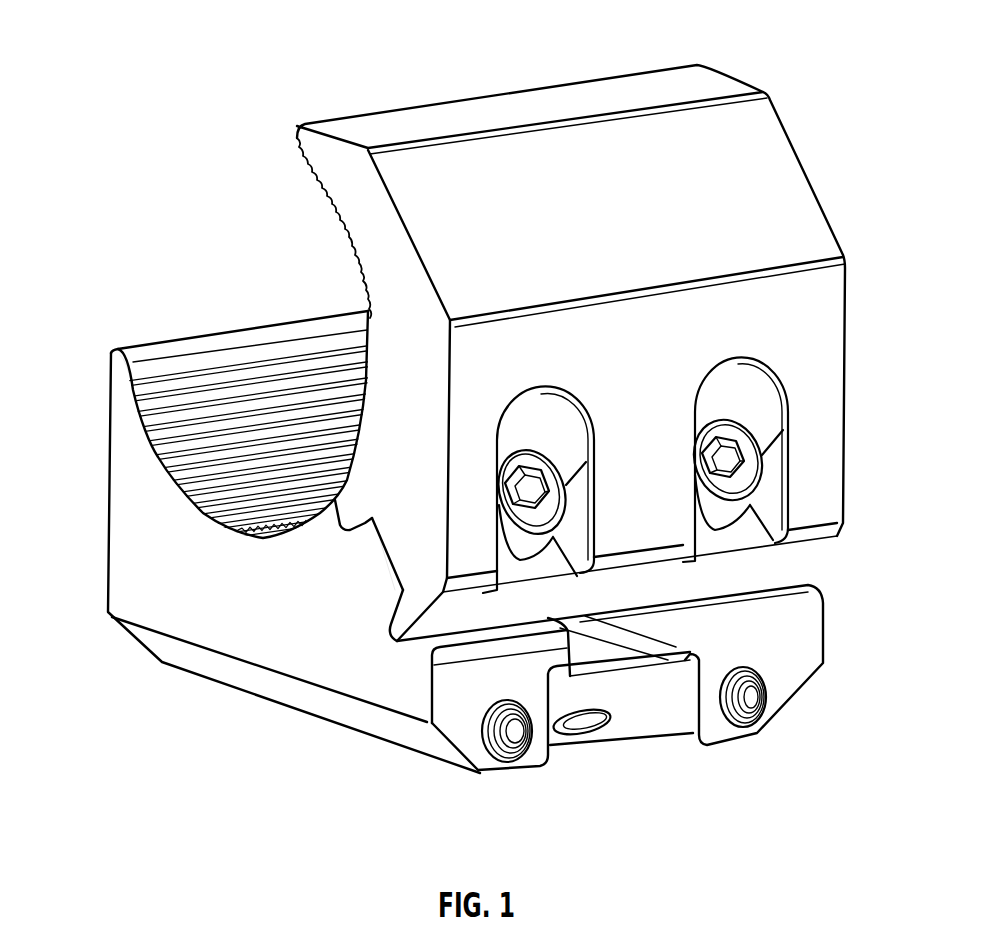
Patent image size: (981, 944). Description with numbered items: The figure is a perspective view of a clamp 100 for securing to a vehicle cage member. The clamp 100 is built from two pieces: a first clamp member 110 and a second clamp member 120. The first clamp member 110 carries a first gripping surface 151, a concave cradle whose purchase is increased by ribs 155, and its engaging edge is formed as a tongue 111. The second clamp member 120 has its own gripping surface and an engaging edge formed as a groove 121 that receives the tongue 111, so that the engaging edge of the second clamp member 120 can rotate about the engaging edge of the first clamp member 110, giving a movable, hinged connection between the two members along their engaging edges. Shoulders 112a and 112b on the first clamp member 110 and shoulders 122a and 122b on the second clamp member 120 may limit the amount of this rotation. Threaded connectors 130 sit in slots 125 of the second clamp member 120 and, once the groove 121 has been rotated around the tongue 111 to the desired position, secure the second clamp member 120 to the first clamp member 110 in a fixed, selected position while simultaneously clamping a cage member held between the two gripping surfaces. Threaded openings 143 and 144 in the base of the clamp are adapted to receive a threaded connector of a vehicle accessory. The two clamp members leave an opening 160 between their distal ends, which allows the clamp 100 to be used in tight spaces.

The clamp 100 is at (375, 88).
The first clamp member 110 is at (125, 555).
The tongue 111 is at (385, 565).
The shoulder 112a is at (390, 636).
The shoulder 112b is at (332, 520).
The second clamp member 120 is at (642, 90).
The groove 121 is at (386, 540).
The shoulder 122a is at (446, 525).
The shoulder 122b is at (350, 522).
The slot 125 is at (750, 540).
The threaded connector 130 is at (745, 447).
The threaded opening 143 is at (503, 758).
The threaded opening 144 is at (575, 725).
The first gripping surface 151 is at (257, 433).
The ribs 155 is at (134, 405).
The opening 160 is at (150, 205).